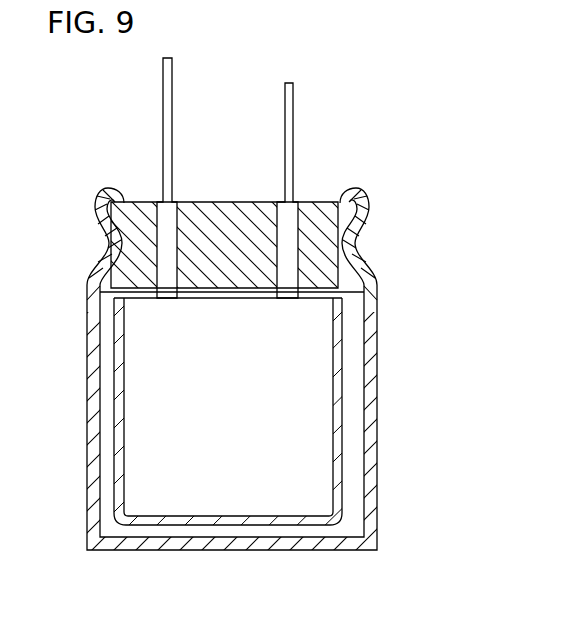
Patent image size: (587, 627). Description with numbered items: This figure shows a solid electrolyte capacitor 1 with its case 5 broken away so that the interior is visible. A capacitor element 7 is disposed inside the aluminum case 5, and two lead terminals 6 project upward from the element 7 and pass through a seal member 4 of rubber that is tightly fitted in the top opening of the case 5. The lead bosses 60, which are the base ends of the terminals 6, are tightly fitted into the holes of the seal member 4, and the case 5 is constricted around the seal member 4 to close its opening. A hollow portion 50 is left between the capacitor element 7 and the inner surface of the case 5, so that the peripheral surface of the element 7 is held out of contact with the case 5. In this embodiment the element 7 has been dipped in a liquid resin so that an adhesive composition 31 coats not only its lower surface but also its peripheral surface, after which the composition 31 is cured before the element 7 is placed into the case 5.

The solid electrolyte capacitor 1 is at (405, 183).
The seal member 4 is at (328, 188).
The case 5 is at (373, 358).
The lead terminals 6 is at (163, 85).
The capacitor element 7 is at (307, 433).
The adhesive composition 31 is at (335, 447).
The hollow portion 50 is at (347, 492).
The lead bosses 60 is at (168, 240).